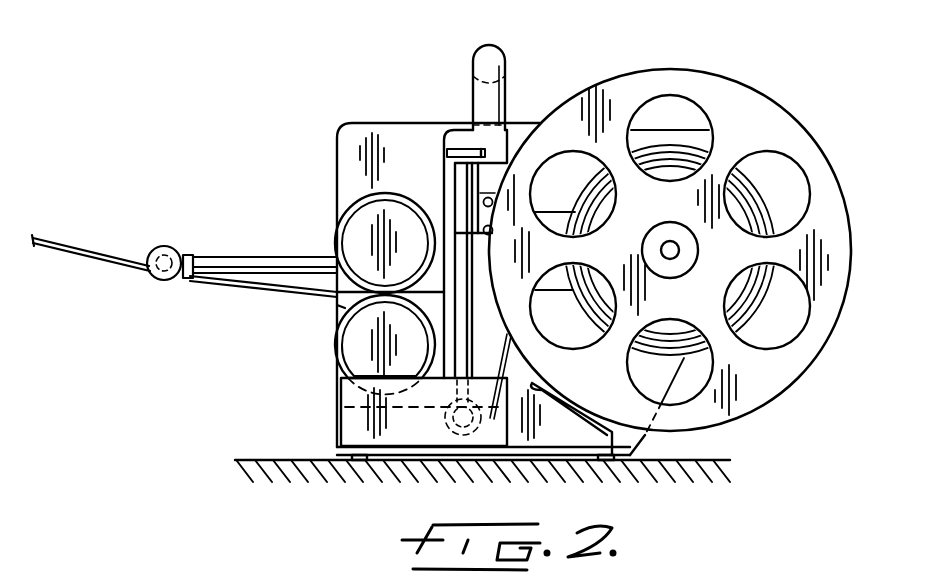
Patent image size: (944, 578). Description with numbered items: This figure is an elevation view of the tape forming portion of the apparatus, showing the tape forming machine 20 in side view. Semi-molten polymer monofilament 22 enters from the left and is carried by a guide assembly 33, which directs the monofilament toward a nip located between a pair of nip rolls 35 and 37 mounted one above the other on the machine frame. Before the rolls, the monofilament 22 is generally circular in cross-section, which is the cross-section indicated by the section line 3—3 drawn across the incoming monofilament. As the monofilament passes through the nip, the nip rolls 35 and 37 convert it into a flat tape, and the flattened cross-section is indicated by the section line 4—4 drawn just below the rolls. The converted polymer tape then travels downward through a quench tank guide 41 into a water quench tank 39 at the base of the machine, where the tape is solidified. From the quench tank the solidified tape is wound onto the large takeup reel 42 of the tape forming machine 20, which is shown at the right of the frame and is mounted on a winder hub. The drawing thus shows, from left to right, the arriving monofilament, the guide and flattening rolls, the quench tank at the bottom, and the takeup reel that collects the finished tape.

The tape forming machine 20 is at (688, 228).
The takeup reel 42 is at (828, 172).
The guide assembly 33 is at (240, 258).
The polymer monofilament 22 is at (300, 288).
The nip roll 35 is at (341, 240).
The nip roll 37 is at (345, 355).
The water quench tank 39 is at (350, 427).
The quench tank guide 41 is at (592, 419).
The section line 3— 3 is at (37, 182).
The section line 4— 4 is at (478, 374).